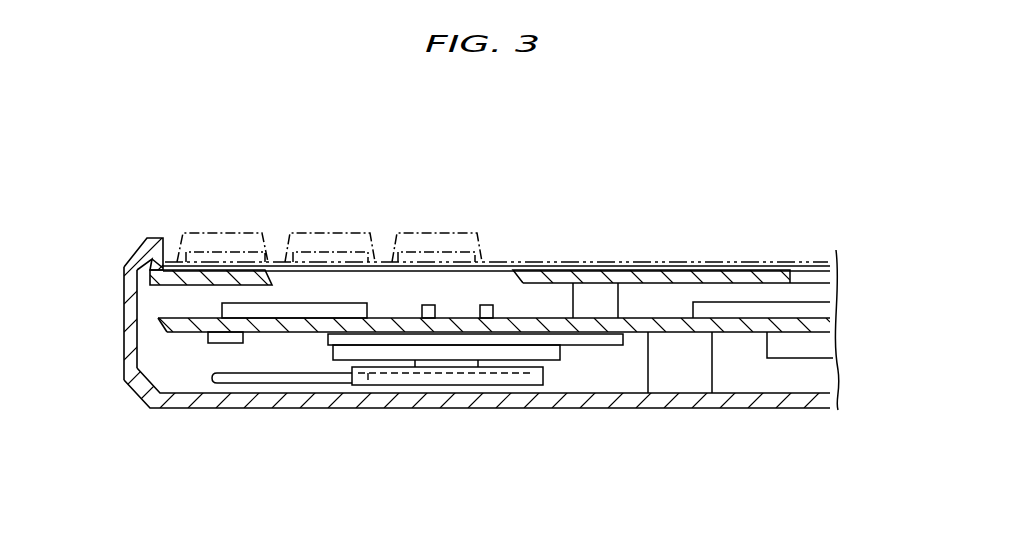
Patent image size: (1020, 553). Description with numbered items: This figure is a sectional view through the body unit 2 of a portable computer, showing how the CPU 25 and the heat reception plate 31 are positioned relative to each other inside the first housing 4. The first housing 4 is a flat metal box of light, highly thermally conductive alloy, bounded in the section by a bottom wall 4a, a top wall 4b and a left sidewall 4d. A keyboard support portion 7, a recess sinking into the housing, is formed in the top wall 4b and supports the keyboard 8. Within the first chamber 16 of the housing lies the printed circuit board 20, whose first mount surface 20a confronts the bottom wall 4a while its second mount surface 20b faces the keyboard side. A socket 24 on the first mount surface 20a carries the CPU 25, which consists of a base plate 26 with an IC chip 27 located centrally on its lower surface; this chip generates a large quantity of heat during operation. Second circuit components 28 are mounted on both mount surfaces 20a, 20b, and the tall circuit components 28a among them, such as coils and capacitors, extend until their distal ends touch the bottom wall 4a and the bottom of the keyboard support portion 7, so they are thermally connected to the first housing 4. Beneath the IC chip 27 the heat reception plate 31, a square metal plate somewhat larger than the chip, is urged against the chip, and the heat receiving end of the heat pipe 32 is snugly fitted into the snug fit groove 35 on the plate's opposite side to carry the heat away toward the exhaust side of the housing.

The body unit 2 is at (126, 258).
The first housing 4 is at (136, 398).
The bottom wall 4a is at (793, 405).
The top wall 4b is at (148, 237).
The left sidewall 4d is at (123, 332).
The keyboard support portion 7 is at (172, 258).
The keyboard 8 is at (316, 232).
The first chamber 16 is at (822, 375).
The printed circuit board 20 is at (494, 331).
The first mount surface 20a is at (265, 335).
The second mount surface 20b is at (507, 318).
The socket 24 is at (588, 337).
The CPU 25 is at (446, 424).
The base plate 26 is at (400, 350).
The IC chip 27 is at (445, 363).
The second circuit components 28 is at (822, 345).
The tall circuit components 28a is at (602, 298).
The heat reception plate 31 is at (521, 380).
The heat pipe 32 is at (229, 382).
The snug fit groove 35 is at (367, 380).